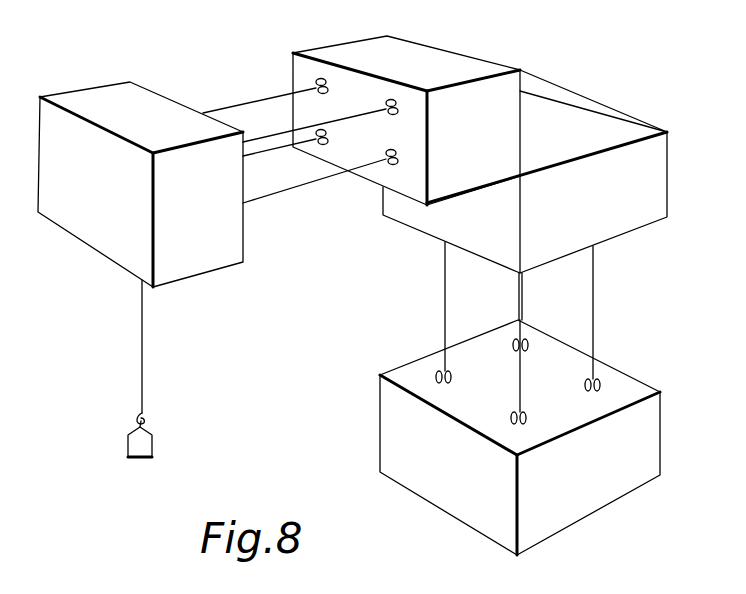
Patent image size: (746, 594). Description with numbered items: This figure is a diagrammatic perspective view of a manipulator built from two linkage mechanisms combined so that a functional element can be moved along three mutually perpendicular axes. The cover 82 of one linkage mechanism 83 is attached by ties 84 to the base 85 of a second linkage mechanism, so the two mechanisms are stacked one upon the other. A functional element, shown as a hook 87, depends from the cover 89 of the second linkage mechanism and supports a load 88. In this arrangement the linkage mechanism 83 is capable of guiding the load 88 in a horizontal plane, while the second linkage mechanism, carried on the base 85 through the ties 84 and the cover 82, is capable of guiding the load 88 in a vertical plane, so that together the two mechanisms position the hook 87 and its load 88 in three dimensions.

The cover 82 is at (618, 218).
The linkage mechanism 83 is at (460, 309).
The ties 84 is at (587, 97).
The base 85 is at (433, 63).
The hook 87 is at (147, 410).
The load 88 is at (140, 467).
The cover 89 is at (122, 95).